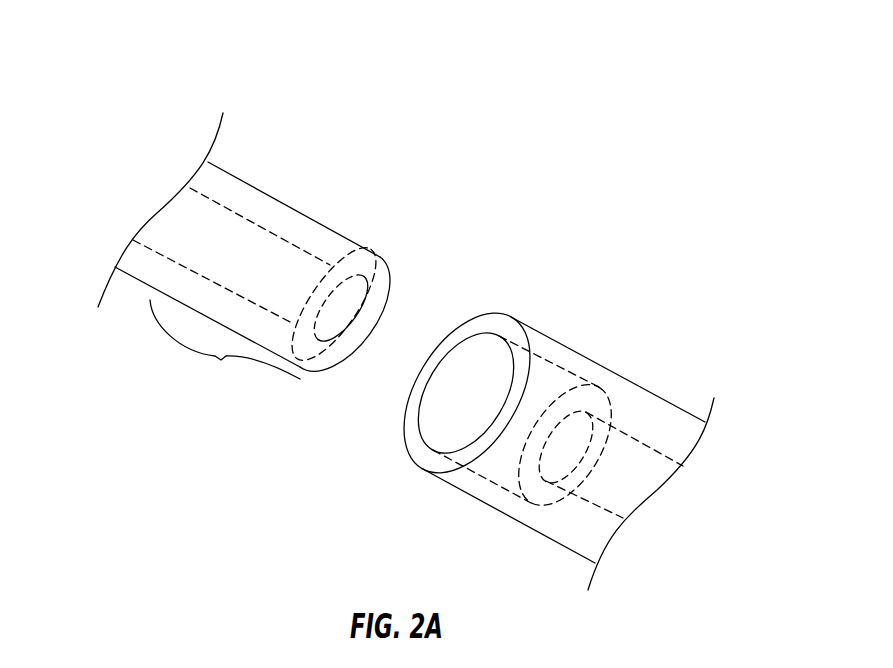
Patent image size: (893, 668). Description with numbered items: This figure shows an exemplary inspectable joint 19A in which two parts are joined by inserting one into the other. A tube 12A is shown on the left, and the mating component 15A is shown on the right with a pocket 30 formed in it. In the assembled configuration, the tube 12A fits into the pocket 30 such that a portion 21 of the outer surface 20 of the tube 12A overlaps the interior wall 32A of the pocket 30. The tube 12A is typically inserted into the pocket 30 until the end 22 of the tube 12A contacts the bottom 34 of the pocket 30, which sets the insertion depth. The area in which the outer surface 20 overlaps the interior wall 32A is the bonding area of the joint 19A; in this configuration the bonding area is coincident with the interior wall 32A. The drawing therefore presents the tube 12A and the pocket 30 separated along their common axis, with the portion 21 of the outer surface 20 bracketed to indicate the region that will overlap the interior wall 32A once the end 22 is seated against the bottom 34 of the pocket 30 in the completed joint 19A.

The inspectable joint 19A is at (522, 77).
The tube 12A is at (302, 102).
The outer surface 20 is at (317, 220).
The portion 21 is at (270, 311).
The end 22 is at (384, 274).
The second tubular connector portion 15A is at (662, 323).
The pocket 30 is at (450, 402).
The interior wall 32A is at (473, 352).
The bottom 34 is at (600, 407).